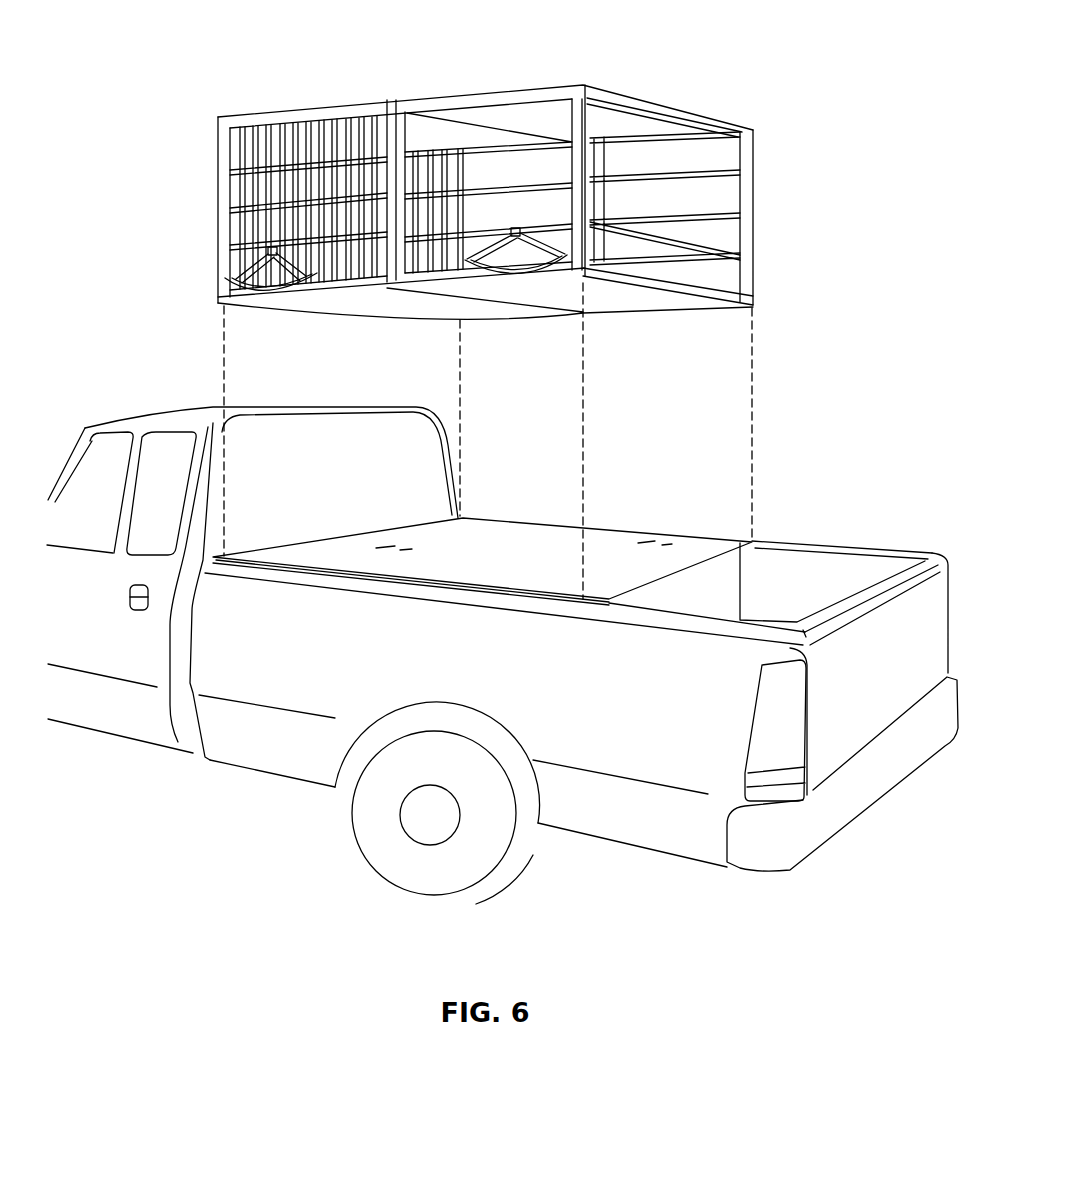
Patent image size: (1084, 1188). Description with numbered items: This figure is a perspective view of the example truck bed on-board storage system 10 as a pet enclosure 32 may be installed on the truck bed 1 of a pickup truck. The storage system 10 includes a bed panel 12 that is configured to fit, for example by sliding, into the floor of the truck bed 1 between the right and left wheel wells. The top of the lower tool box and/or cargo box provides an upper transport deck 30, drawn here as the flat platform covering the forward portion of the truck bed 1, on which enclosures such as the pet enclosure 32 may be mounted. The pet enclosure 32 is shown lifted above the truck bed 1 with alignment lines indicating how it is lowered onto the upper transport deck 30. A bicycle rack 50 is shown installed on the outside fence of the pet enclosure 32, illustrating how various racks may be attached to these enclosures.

The truck bed 1 is at (886, 530).
The truck bed on-board storage system 10 is at (804, 206).
The bed panel 12 is at (793, 587).
The upper transport deck 30 is at (648, 528).
The pet enclosure 32 is at (712, 114).
The bicycle rack 50 is at (497, 249).